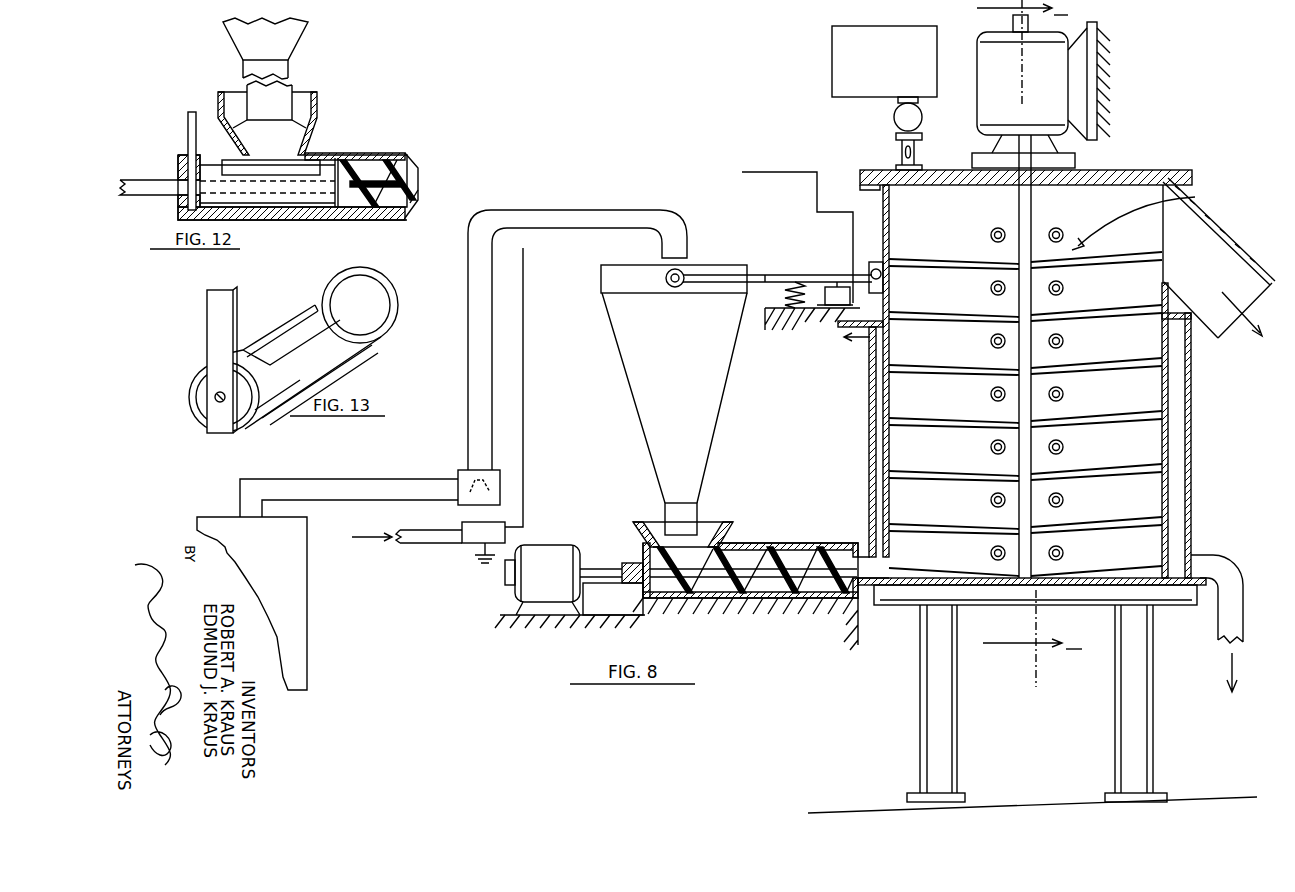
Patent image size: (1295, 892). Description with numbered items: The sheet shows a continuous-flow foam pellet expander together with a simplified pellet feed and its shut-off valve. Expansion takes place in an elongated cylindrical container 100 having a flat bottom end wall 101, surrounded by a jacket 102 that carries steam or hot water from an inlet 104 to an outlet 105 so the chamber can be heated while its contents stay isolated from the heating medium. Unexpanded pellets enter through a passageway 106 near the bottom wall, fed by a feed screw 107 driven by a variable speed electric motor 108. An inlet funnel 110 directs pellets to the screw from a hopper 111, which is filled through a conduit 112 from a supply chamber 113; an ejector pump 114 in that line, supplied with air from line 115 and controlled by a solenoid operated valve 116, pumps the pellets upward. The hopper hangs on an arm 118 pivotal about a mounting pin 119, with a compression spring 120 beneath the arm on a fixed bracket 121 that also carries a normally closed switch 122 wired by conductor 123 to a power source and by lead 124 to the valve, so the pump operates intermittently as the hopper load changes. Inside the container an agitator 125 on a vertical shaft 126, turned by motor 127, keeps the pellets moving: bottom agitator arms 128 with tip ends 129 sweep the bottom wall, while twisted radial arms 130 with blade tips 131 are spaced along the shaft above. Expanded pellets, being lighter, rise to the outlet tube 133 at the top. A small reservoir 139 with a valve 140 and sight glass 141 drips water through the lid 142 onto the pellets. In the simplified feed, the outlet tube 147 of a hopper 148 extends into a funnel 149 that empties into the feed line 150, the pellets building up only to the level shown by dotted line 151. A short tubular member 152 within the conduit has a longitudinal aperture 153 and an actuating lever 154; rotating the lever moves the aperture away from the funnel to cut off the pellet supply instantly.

In FIG. 8, the cylindrical container 100 is at (1180, 399).
In FIG. 8, the bottom end wall 101 is at (960, 588).
In FIG. 8, the jacket 102 is at (1193, 466).
In FIG. 8, the inlet 104 is at (855, 346).
In FIG. 8, the outlet 105 is at (1245, 628).
In FIG. 8, the passageway 106 is at (861, 556).
In FIG. 12, the feed screw 107 is at (405, 182).
In FIG. 8, the feed screw 107 is at (763, 553).
In FIG. 8, the variable speed electric motor 108 is at (540, 557).
In FIG. 8, the inlet funnel 110 is at (708, 525).
In FIG. 8, the hopper 111 is at (700, 426).
In FIG. 8, the conduit 112 is at (555, 221).
In FIG. 8, the supply chamber 113 is at (290, 622).
In FIG. 8, the ejector pump 114 is at (470, 511).
In FIG. 8, the air line 115 is at (432, 537).
In FIG. 8, the valve 116 is at (467, 548).
In FIG. 8, the arm 118 is at (748, 278).
In FIG. 8, the mounting pin 119 is at (868, 272).
In FIG. 8, the compression spring 120 is at (790, 318).
In FIG. 8, the fixed bracket 121 is at (786, 306).
In FIG. 8, the switch 122 is at (838, 302).
In FIG. 8, the conductor 123 is at (816, 170).
In FIG. 8, the lead 124 is at (526, 392).
In FIG. 8, the agitator 125 is at (1149, 218).
In FIG. 8, the shaft 126 is at (1016, 201).
In FIG. 8, the motor 127 is at (1000, 61).
In FIG. 8, the agitator arms 128 is at (967, 574).
In FIG. 8, the tip ends 129 is at (899, 577).
In FIG. 8, the radial arms 130 is at (1140, 368).
In FIG. 8, the blade tips 131 is at (1168, 363).
In FIG. 8, the outlet tube 133 is at (1200, 236).
In FIG. 8, the reservoir 139 is at (835, 80).
In FIG. 8, the valve 140 is at (894, 118).
In FIG. 8, the sight glass 141 is at (898, 153).
In FIG. 8, the lid 142 is at (1118, 168).
In FIG. 12, the outlet tube 147 is at (288, 88).
In FIG. 12, the hopper 148 is at (232, 34).
In FIG. 12, the funnel 149 is at (318, 95).
In FIG. 12, the feed line 150 is at (380, 150).
In FIG. 12, the dotted line 151 is at (320, 108).
In FIG. 12, the tubular member 152 is at (318, 212).
In FIG. 13, the tubular member 152 is at (368, 291).
In FIG. 12, the aperture 153 is at (306, 165).
In FIG. 13, the aperture 153 is at (310, 330).
In FIG. 12, the actuating lever 154 is at (190, 115).
In FIG. 13, the actuating lever 154 is at (220, 327).